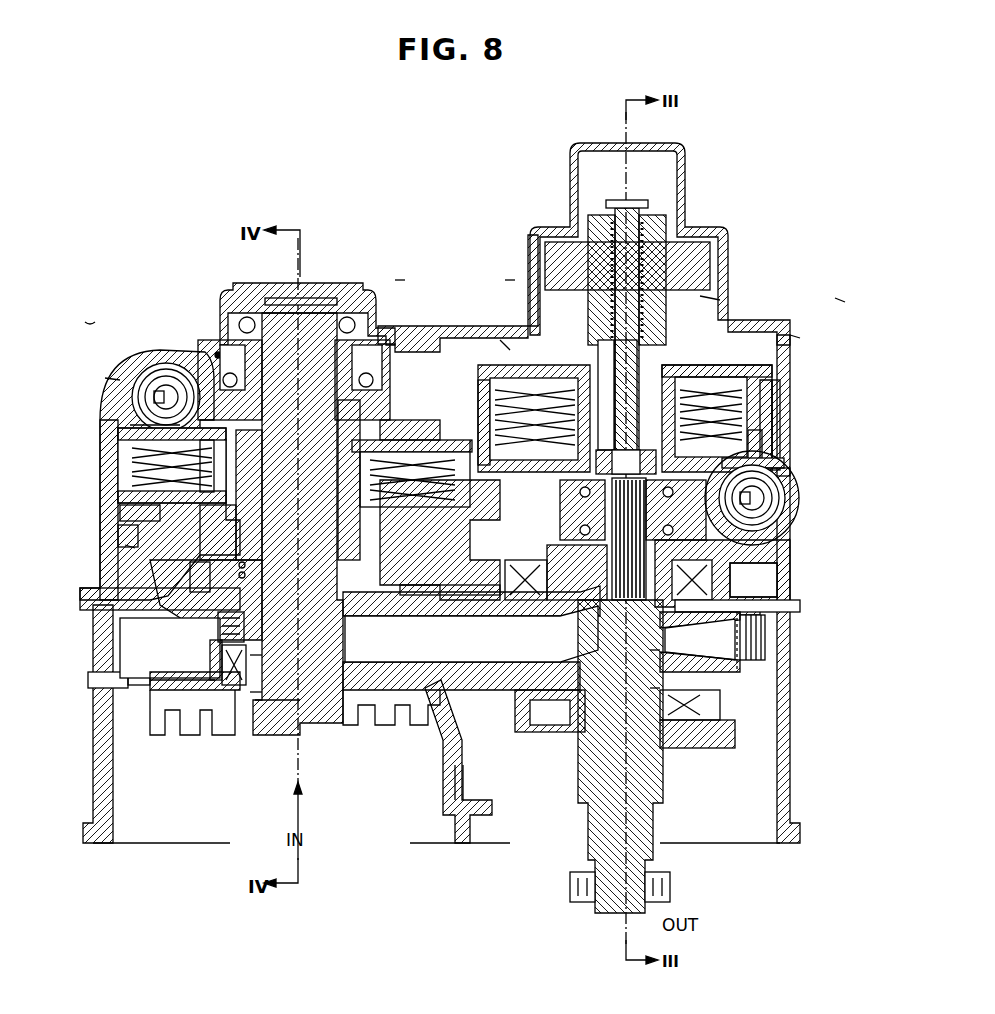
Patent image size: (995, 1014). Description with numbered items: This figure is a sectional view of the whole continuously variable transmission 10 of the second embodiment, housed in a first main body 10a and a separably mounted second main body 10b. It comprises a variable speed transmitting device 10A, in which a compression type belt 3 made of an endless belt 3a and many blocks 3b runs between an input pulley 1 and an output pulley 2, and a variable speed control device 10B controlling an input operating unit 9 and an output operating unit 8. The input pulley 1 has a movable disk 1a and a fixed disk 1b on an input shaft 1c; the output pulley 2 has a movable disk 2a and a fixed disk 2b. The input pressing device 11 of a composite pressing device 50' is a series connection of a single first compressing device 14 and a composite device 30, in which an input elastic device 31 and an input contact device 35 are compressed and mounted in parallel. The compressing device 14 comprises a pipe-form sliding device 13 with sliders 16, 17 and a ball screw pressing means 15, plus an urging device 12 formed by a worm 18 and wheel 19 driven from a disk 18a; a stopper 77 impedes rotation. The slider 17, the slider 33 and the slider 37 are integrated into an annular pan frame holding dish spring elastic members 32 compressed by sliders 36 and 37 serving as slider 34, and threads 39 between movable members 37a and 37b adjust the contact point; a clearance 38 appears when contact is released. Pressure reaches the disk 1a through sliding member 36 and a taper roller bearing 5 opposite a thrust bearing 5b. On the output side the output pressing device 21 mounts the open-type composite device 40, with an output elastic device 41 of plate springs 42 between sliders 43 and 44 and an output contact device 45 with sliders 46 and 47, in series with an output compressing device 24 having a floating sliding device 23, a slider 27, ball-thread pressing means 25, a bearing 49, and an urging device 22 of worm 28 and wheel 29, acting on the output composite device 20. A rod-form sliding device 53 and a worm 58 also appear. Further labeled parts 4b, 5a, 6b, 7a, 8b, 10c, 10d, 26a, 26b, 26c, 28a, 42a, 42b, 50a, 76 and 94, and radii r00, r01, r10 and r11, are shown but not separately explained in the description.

The input pulley 1 is at (338, 705).
The movable disk 1a is at (165, 612).
The fixed disk 1b is at (178, 680).
The input shaft 1c is at (312, 312).
The output pulley 2 is at (490, 773).
The movable disk 2a is at (480, 740).
The fixed disk 2b is at (540, 622).
The belt 3 is at (420, 733).
The endless belt 3a is at (222, 655).
The blocks 3b is at (222, 630).
The housing cover plate 4b is at (790, 612).
The bearing 5 is at (215, 578).
The left ball bearing 5a is at (212, 362).
The thrust bearing 5b is at (226, 355).
The tapered roller bearing 6b is at (720, 692).
The roller bearing 7a is at (238, 688).
The output operating unit 8 is at (510, 280).
The clutch boss 8b is at (770, 480).
The input operating unit 9 is at (402, 278).
The continuously variable transmission 10 is at (145, 278).
The first main body 10a is at (93, 770).
The second main body 10b is at (105, 430).
The housing partition 10c is at (500, 560).
The housing partition wall 10d is at (462, 532).
The variable speed transmitting device 10A is at (425, 783).
The variable speed control device 10B is at (452, 240).
The input pressing device 11 is at (116, 382).
The urging device 12 is at (214, 352).
The sliding device 13 is at (400, 420).
The first compressing device 14 is at (398, 432).
The pressing means 15 is at (386, 450).
The slider 16 is at (340, 370).
The slider 17 is at (262, 520).
The worm 18 is at (150, 396).
The disk 18a is at (196, 400).
The wheel 19 is at (164, 393).
The output composite device 20 is at (800, 338).
The output pressing device 21 is at (842, 296).
The urging device 22 is at (765, 562).
The sliding device 23 is at (710, 298).
The output compressing device 24 is at (775, 292).
The ball-thread pressing means 25 is at (660, 230).
The ball chain 26a is at (660, 332).
The ball bearing hub 26b is at (602, 532).
The tapered roller 26c is at (700, 642).
The slider 27 is at (700, 260).
The worm 28 is at (780, 500).
The clutch gear shaft 28a is at (762, 508).
The wheel 29 is at (745, 520).
The composite device 30 is at (120, 493).
The input elastic device 31 is at (128, 552).
The elastic members 32 is at (195, 480).
The slider 33 is at (155, 445).
The slider 34 is at (262, 540).
The input contact device 35 is at (168, 600).
The sliding member 36 is at (145, 598).
The slider 37 is at (150, 512).
The movable member 37a is at (210, 530).
The movable member 37b is at (200, 460).
The clearance 38 is at (262, 568).
The threads 39 is at (122, 545).
The composite device 40 is at (506, 346).
The output elastic device 41 is at (702, 376).
The elastic member 42 is at (540, 385).
The spring stem 42a is at (594, 455).
The spring guide 42b is at (604, 420).
The slider 43 is at (500, 380).
The slider 44 is at (462, 440).
The output contact device 45 is at (782, 422).
The slider 46 is at (790, 472).
The slider 47 is at (768, 438).
The bearing 49 is at (640, 450).
The composite pressing device 50' is at (70, 305).
The spline shaft 50a is at (625, 640).
The sliding device 53 is at (735, 738).
The worm 58 is at (540, 735).
The gear ring 76 is at (760, 535).
The stopper 77 is at (466, 437).
The shim 94 is at (785, 464).
The radius r00 is at (641, 686).
The radius r01 is at (641, 649).
The radius r10 is at (270, 650).
The radius r11 is at (272, 688).